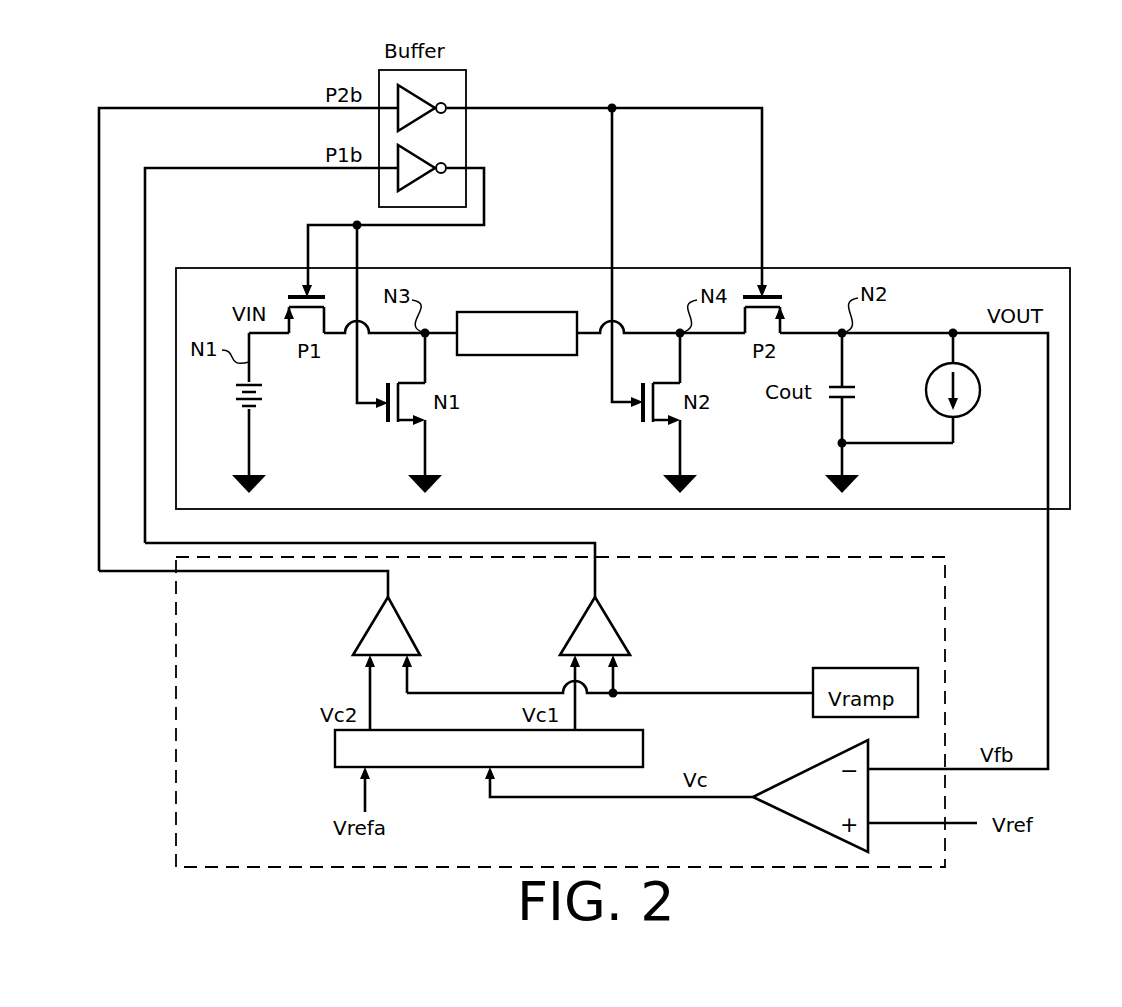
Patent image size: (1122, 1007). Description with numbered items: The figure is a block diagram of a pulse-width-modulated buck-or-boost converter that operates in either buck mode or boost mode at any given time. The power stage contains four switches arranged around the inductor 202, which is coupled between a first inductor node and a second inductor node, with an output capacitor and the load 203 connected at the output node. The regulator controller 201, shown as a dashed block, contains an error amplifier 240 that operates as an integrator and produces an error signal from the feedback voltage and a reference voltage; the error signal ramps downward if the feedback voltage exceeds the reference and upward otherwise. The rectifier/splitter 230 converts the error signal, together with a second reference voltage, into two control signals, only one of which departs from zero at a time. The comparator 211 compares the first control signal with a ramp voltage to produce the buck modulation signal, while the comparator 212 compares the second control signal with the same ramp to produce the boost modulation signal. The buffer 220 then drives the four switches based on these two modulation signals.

The buffer 220 is at (466, 90).
The inductor 202 is at (517, 355).
The load 203 is at (972, 410).
The regulator controller 201 is at (560, 712).
The comparator 212 is at (410, 618).
The comparator 211 is at (616, 618).
The rectifier/splitter 230 is at (643, 750).
The error amplifier 240 is at (815, 767).